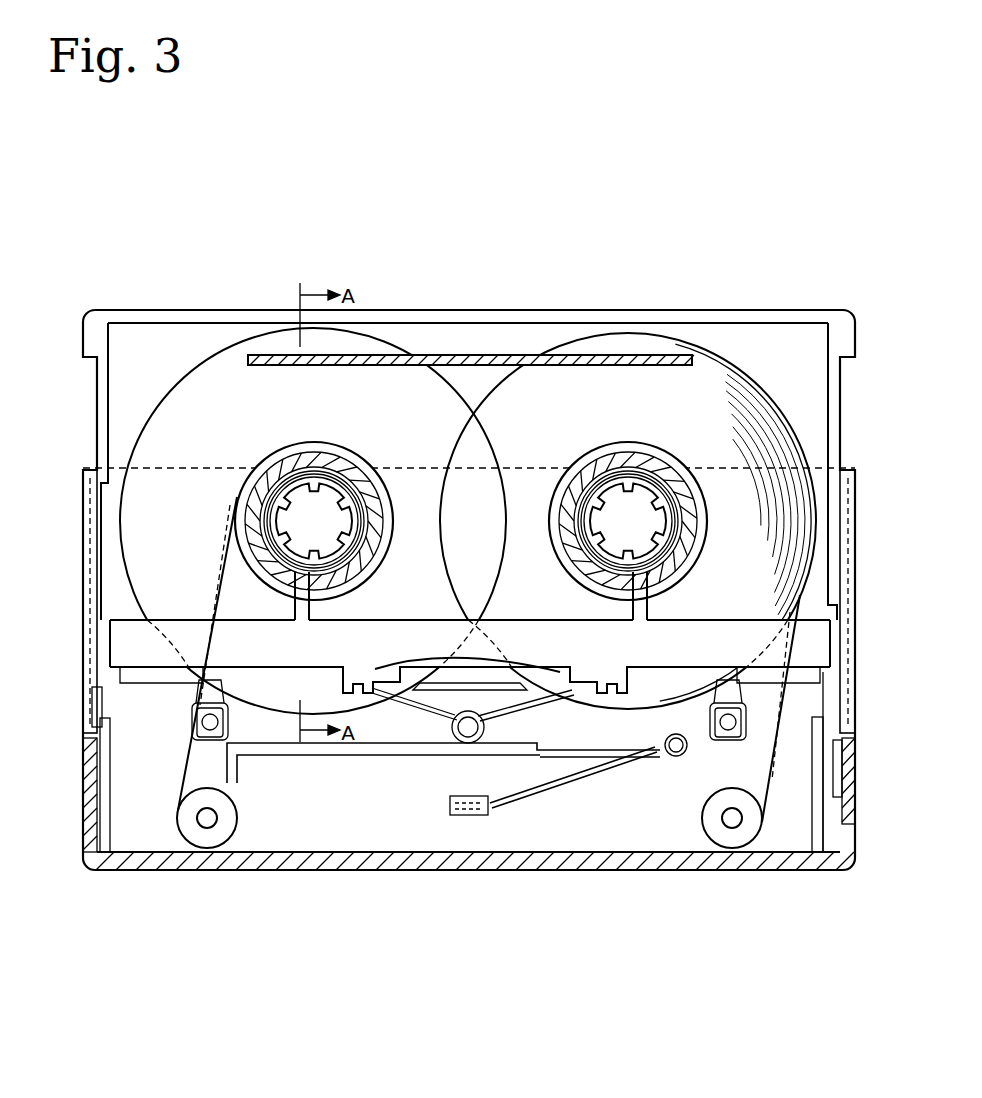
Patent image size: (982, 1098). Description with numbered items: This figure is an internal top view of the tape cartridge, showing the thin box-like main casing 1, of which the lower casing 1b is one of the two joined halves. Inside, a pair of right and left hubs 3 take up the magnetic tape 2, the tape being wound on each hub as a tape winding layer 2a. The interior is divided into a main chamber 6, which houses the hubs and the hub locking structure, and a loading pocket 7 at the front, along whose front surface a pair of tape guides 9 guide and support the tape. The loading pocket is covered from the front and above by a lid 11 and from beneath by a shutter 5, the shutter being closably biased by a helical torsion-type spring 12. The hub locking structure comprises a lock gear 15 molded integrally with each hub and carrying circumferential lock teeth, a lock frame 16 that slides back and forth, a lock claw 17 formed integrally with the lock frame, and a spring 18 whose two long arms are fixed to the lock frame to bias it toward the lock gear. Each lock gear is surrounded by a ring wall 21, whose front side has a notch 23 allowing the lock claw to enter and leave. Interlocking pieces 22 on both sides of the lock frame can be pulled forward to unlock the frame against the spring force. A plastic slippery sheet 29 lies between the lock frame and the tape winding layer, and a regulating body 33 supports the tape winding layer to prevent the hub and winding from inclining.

The main casing 1 is at (608, 307).
The lower casing 1b is at (205, 306).
The magnetic tape 2 is at (537, 832).
The tape winding layer 2a is at (712, 383).
The hub 3 is at (290, 447).
The shutter 5 is at (84, 518).
The main chamber 6 is at (469, 429).
The loading pocket 7 is at (443, 782).
The tape guide 9 is at (235, 820).
The lid 11 is at (378, 862).
The helical torsion-type spring 12 is at (558, 793).
The lock gear 15 is at (250, 493).
The lock frame 16 is at (507, 618).
The lock claw 17 is at (277, 597).
The spring 18 is at (420, 707).
The ring wall 21 is at (363, 455).
The interlocking piece 22 is at (93, 805).
The notch 23 is at (305, 600).
The slippery sheet 29 is at (145, 415).
The regulating body 33 is at (437, 355).